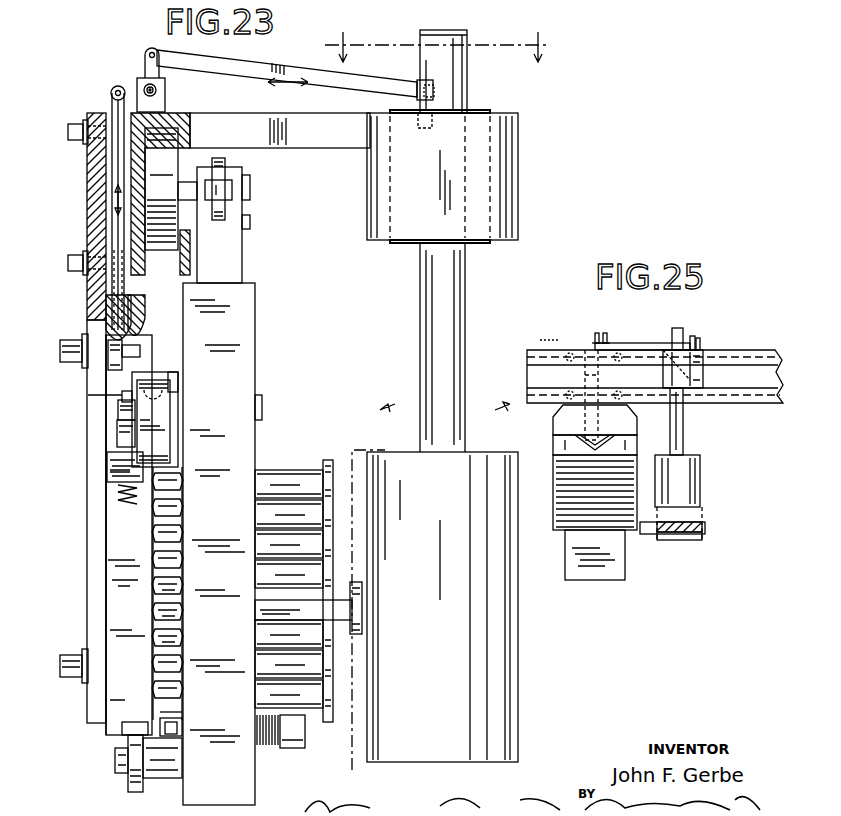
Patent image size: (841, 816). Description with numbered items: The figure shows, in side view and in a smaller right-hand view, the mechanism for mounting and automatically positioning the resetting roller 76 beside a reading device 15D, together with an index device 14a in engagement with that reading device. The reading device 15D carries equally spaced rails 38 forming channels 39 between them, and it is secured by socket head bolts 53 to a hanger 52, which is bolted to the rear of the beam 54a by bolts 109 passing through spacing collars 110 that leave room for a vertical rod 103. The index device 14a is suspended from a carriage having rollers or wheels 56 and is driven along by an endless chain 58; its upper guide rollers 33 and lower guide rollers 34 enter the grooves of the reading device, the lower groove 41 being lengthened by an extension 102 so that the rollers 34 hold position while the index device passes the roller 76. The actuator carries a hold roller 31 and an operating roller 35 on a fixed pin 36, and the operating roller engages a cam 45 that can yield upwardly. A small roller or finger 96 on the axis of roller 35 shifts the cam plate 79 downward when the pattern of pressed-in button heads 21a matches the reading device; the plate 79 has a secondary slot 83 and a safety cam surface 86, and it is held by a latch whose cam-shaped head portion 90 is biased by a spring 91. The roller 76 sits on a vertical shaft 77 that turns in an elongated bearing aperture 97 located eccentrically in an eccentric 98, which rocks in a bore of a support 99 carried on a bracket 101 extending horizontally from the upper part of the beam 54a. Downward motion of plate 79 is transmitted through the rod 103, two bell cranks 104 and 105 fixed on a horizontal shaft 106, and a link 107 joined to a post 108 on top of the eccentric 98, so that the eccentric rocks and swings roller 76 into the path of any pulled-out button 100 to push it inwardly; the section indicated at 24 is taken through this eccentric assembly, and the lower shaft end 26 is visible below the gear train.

In FIG. 23, the index device 14a is at (260, 362).
In FIG. 23, the reading device 15D is at (119, 539).
In FIG. 25, the reading device 15D is at (548, 434).
In FIG. 23, the button member or head 21a is at (325, 535).
In FIG. 23, the section line 24 is at (439, 34).
In FIG. 23, the shaft end 26 is at (295, 750).
In FIG. 23, the hold roller 31 is at (172, 715).
In FIG. 23, the upper guide or positioning rollers 33 is at (155, 437).
In FIG. 23, the lower guide or positioning rollers 34 is at (130, 782).
In FIG. 23, the operating roller 35 is at (160, 412).
In FIG. 23, the fixed pin 36 is at (262, 410).
In FIG. 23, the rails 38 is at (172, 530).
In FIG. 23, the channels 39 is at (172, 640).
In FIG. 23, the groove 41 is at (135, 725).
In FIG. 25, the groove 41 is at (700, 535).
In FIG. 23, the cam 45 is at (170, 404).
In FIG. 23, the hanger 52 is at (95, 472).
In FIG. 23, the socket head bolts 53 is at (70, 343).
In FIG. 23, the beam 54a is at (135, 173).
In FIG. 25, the beam 54a is at (752, 350).
In FIG. 23, the rollers or wheels 56 is at (171, 189).
In FIG. 23, the endless chain 58 is at (222, 165).
In FIG. 23, the resetting member or roller 76 is at (495, 660).
In FIG. 25, the resetting member or roller 76 is at (690, 488).
In FIG. 23, the vertical shaft 77 is at (455, 305).
In FIG. 25, the vertical shaft 77 is at (680, 452).
In FIG. 23, the cam plate 79 is at (100, 340).
In FIG. 23, the secondary slot 83 is at (125, 398).
In FIG. 23, the cam surface 86 is at (118, 437).
In FIG. 23, the head portion 90 is at (118, 475).
In FIG. 25, the head portion 90 is at (555, 465).
In FIG. 23, the spring 91 is at (118, 500).
In FIG. 23, the roller or finger 96 is at (120, 415).
In FIG. 23, the bearing aperture 97 is at (465, 190).
In FIG. 23, the eccentric 98 is at (480, 112).
In FIG. 23, the support 99 is at (500, 148).
In FIG. 25, the support 99 is at (703, 376).
In FIG. 23, the button 100 is at (360, 605).
In FIG. 23, the bracket 101 is at (300, 140).
In FIG. 25, the extension 102 is at (648, 540).
In FIG. 23, the vertical rod 103 is at (115, 222).
In FIG. 25, the vertical rod 103 is at (588, 352).
In FIG. 23, the bell crank 104 is at (137, 78).
In FIG. 25, the bell crank 104 is at (600, 343).
In FIG. 25, the bell crank 105 is at (698, 340).
In FIG. 23, the horizontal shaft 106 is at (157, 90).
In FIG. 25, the horizontal shaft 106 is at (660, 343).
In FIG. 23, the link 107 is at (258, 70).
In FIG. 25, the link 107 is at (690, 322).
In FIG. 23, the post 108 is at (415, 98).
In FIG. 25, the post 108 is at (670, 355).
In FIG. 23, the bolts 109 is at (72, 133).
In FIG. 23, the spacing collars 110 is at (108, 113).
In FIG. 25, the spacing collars 110 is at (546, 365).